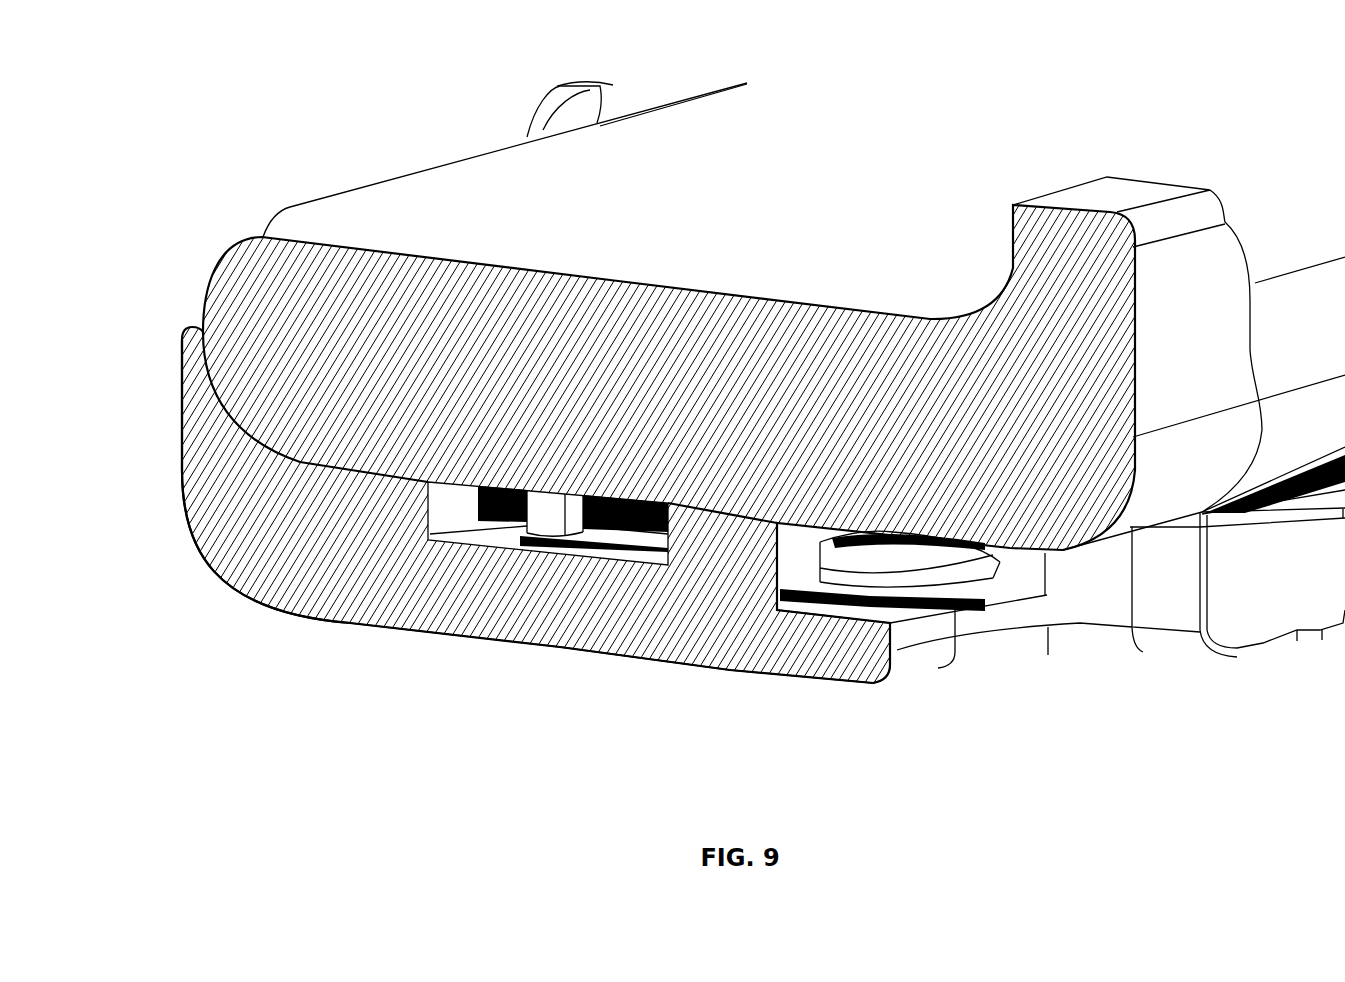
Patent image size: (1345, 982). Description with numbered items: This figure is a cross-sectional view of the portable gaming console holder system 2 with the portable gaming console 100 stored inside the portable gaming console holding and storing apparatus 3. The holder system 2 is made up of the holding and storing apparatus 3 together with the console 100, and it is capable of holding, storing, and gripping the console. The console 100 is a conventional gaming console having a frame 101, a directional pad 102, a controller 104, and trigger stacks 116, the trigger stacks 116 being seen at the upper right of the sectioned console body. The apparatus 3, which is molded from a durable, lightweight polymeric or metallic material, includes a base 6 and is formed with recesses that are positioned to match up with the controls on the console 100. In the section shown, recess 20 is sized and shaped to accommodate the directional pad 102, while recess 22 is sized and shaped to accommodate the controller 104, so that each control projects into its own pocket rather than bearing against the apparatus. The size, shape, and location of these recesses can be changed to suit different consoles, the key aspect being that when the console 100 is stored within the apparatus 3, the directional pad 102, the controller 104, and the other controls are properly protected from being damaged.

The portable gaming console 100 is at (341, 130).
The frame 101 is at (706, 220).
The trigger stacks 116 is at (1013, 247).
The portable gaming console holding and storing apparatus 3 is at (163, 412).
The portable gaming console holder system 2 is at (185, 592).
The directional pad 102 is at (557, 507).
The recess 20 is at (538, 660).
The base 6 is at (740, 645).
The controller 104 is at (935, 594).
The recess 22 is at (1007, 663).